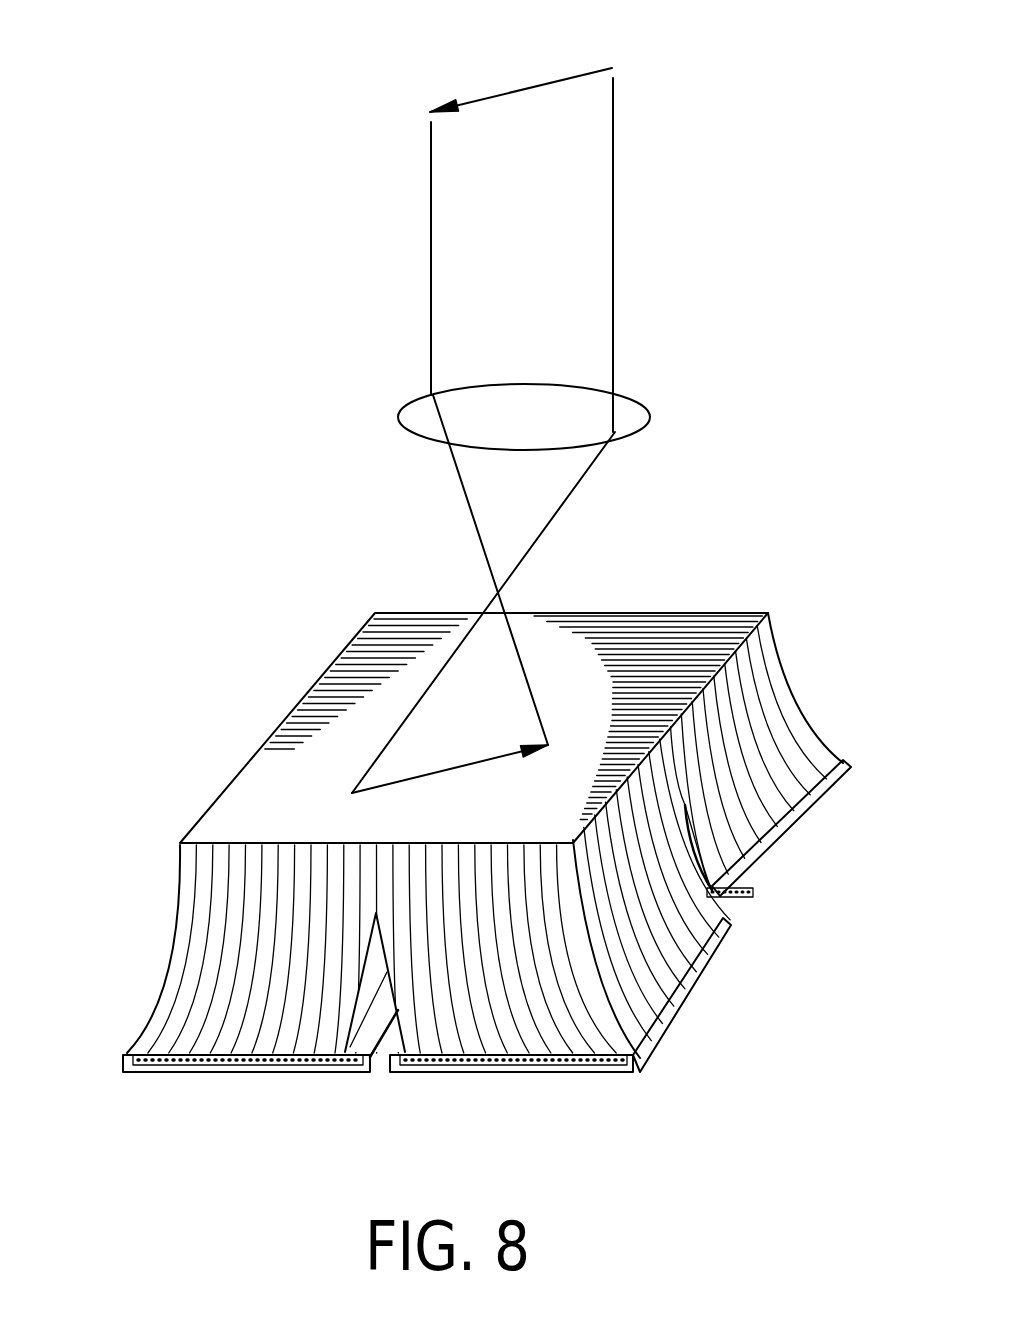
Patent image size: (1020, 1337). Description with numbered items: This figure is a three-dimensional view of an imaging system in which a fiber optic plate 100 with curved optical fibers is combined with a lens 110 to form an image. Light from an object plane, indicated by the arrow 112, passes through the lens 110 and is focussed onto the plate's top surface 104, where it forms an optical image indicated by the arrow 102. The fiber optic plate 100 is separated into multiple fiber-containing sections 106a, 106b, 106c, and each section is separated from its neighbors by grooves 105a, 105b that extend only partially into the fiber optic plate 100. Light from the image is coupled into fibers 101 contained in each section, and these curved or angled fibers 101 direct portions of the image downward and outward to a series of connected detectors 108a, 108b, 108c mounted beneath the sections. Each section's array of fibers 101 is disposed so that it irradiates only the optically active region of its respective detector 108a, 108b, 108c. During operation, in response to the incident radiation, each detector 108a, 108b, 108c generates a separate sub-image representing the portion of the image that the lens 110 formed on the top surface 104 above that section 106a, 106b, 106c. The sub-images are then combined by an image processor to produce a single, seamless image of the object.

The fiber optic plate 100 is at (482, 819).
The fibers 101 is at (178, 890).
The optical image 102 is at (448, 770).
The top surface 104 is at (308, 818).
The groove 105a is at (380, 1086).
The groove 105b is at (762, 930).
The fiber-containing section 106a is at (168, 982).
The fiber-containing section 106b is at (778, 682).
The fiber-containing section 106c is at (483, 860).
The detector 108a is at (180, 1073).
The detector 108b is at (598, 1072).
The detector 108c is at (795, 852).
The lens 110 is at (651, 418).
The light from an object plane 112 is at (522, 90).